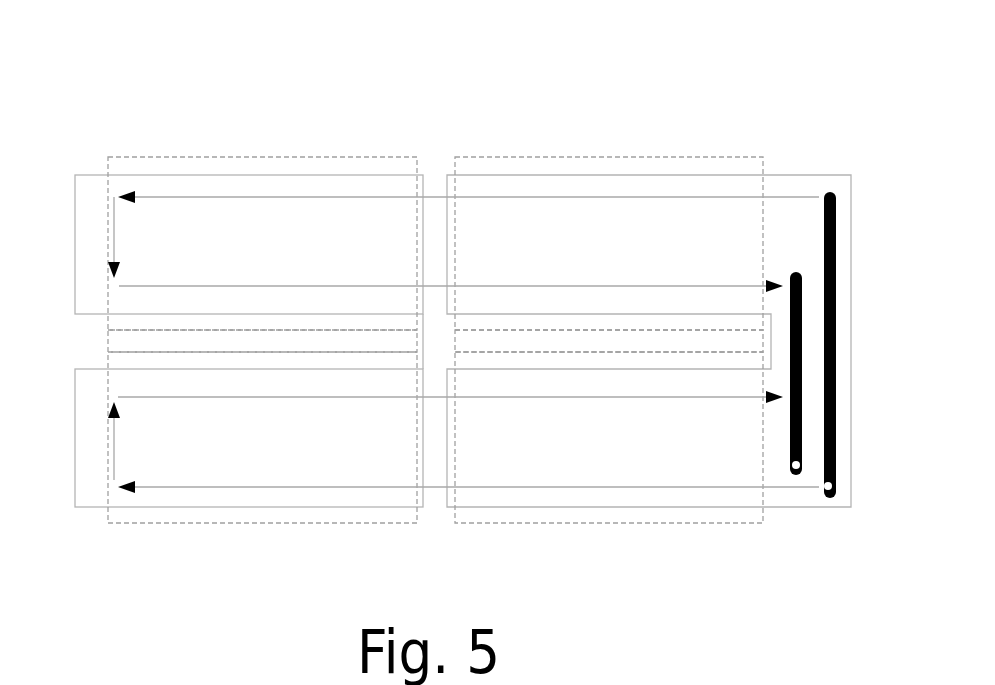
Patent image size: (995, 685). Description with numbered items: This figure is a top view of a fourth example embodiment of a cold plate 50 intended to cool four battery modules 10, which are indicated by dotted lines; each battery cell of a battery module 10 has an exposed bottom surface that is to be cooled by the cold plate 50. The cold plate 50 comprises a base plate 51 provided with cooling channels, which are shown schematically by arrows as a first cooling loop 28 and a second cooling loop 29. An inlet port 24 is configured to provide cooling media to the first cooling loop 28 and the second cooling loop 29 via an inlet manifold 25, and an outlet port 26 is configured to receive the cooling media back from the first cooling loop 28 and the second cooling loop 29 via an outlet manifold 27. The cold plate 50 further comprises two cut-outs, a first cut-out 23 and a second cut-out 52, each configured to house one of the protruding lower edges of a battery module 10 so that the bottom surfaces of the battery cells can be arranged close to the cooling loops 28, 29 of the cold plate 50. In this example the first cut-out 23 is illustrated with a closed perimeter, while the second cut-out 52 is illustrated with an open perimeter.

The cold plate 50 is at (112, 87).
The base plate 51 is at (92, 185).
The second cut-out 52 is at (80, 342).
The battery module 10 is at (373, 157).
The first cut-out 23 is at (665, 340).
The inlet port 24 is at (853, 478).
The inlet manifold 25 is at (838, 308).
The outlet port 26 is at (781, 478).
The outlet manifold 27 is at (800, 272).
The first cooling loop 28 is at (115, 448).
The second cooling loop 29 is at (115, 250).